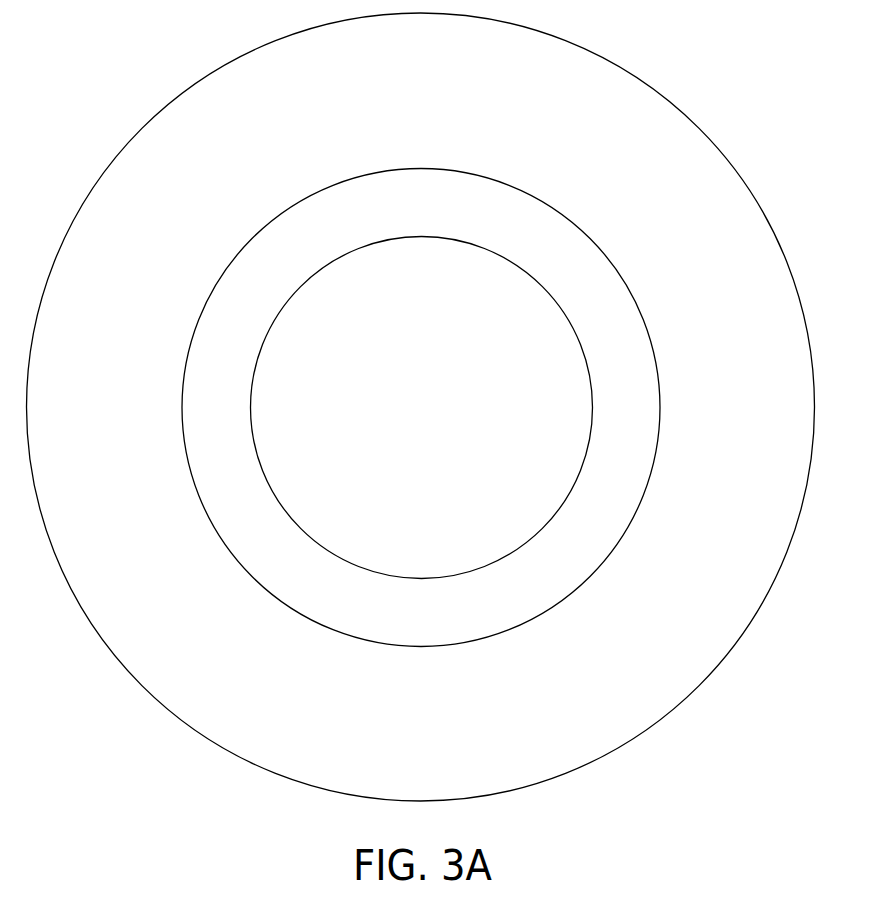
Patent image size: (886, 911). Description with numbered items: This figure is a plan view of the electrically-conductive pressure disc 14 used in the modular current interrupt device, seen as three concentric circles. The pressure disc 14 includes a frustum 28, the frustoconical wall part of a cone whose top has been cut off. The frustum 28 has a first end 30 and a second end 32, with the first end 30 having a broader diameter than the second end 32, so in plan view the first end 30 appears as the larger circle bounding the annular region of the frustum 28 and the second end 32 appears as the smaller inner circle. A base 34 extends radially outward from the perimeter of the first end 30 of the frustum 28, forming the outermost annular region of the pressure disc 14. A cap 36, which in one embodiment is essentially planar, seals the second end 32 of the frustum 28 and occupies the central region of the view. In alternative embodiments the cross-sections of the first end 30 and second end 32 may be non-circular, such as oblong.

The electrically-conductive pressure disc 14 is at (72, 134).
The frustum 28 is at (640, 418).
The first end 30 is at (608, 257).
The second end 32 is at (555, 513).
The base 34 is at (739, 418).
The cap 36 is at (434, 417).